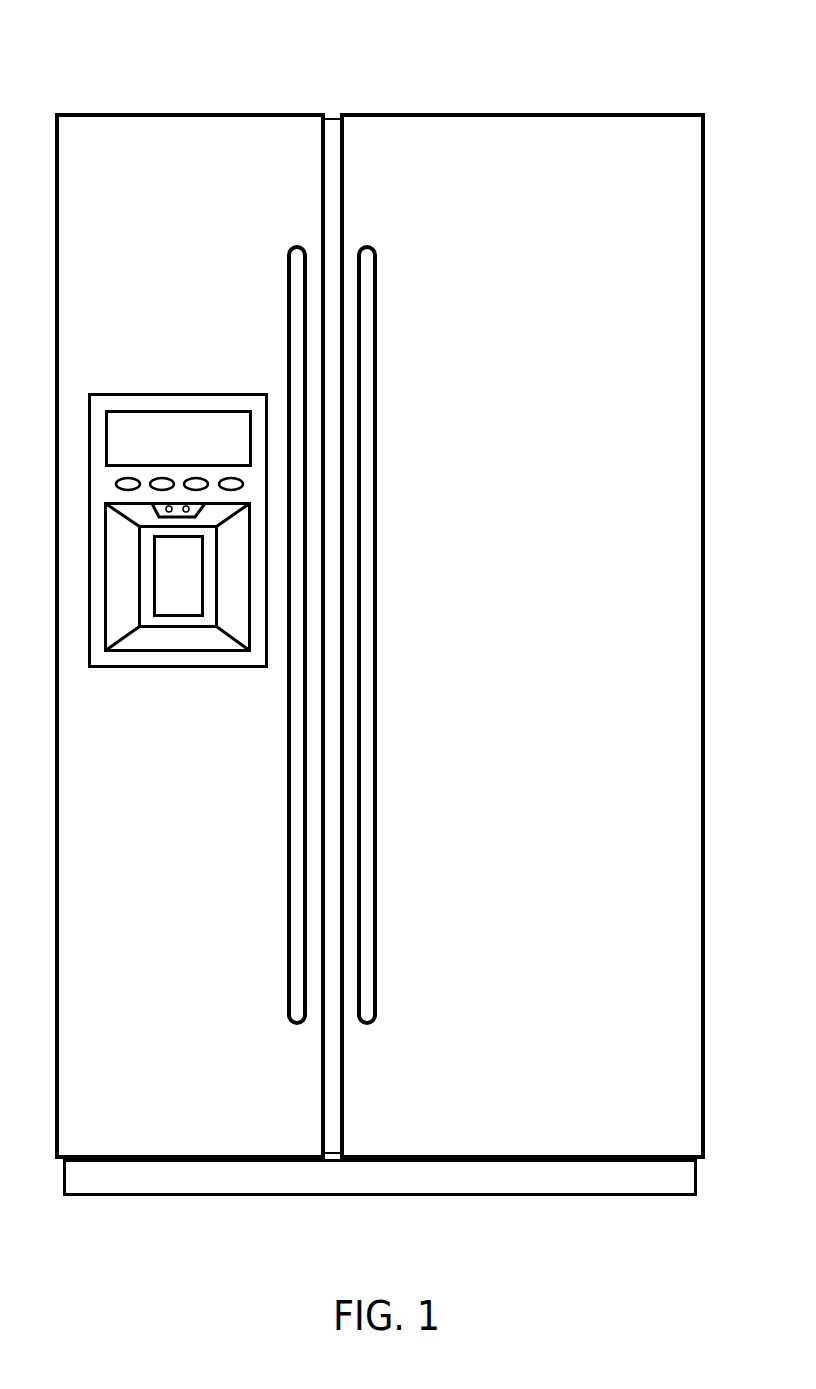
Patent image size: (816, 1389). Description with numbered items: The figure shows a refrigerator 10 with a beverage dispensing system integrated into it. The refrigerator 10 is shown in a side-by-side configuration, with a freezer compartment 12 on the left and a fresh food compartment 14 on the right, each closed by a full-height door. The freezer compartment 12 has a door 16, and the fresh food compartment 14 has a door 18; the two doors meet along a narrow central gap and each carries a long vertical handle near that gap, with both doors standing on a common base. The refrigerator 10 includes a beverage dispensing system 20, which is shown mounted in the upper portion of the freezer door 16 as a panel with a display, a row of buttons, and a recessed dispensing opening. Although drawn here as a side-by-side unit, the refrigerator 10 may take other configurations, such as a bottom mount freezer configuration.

The refrigerator 10 is at (379, 63).
The freezer compartment 12 is at (196, 834).
The fresh food compartment 14 is at (532, 834).
The door 16 is at (183, 150).
The door 18 is at (477, 150).
The beverage dispensing system 20 is at (121, 392).